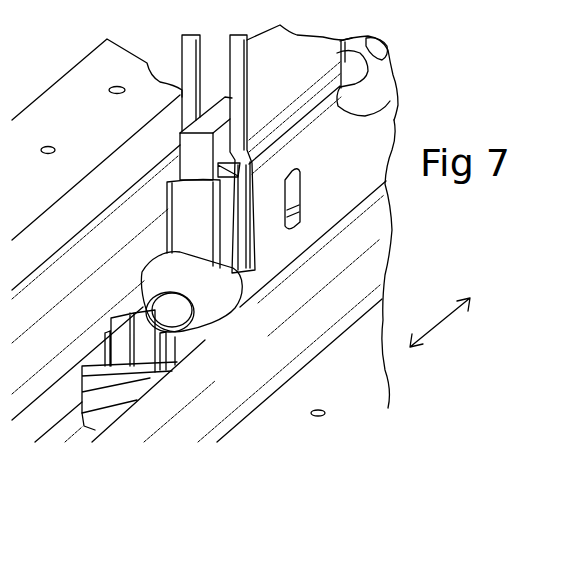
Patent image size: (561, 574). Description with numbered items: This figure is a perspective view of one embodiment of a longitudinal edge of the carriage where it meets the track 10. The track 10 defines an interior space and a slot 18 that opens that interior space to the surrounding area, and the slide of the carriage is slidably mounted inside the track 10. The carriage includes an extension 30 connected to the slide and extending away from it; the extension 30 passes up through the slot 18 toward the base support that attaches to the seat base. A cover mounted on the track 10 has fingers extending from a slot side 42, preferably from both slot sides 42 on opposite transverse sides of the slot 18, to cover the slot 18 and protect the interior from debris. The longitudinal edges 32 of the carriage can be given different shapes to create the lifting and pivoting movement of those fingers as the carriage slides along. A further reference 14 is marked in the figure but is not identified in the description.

The track 10 is at (361, 440).
The direction of travel 14 is at (447, 320).
The slot 18 is at (84, 418).
The extension 30 is at (345, 193).
The longitudinal edges 32 is at (193, 227).
The slot side 42 is at (197, 340).